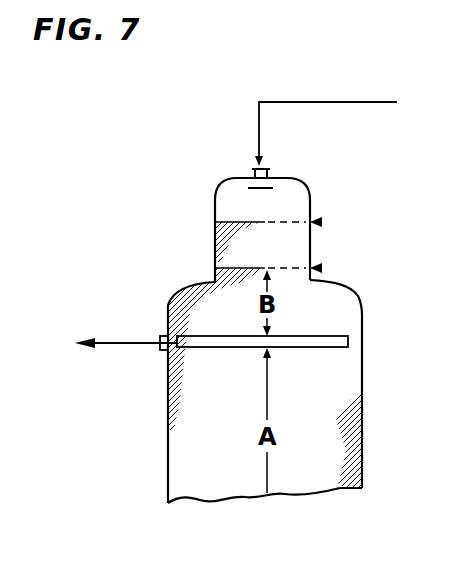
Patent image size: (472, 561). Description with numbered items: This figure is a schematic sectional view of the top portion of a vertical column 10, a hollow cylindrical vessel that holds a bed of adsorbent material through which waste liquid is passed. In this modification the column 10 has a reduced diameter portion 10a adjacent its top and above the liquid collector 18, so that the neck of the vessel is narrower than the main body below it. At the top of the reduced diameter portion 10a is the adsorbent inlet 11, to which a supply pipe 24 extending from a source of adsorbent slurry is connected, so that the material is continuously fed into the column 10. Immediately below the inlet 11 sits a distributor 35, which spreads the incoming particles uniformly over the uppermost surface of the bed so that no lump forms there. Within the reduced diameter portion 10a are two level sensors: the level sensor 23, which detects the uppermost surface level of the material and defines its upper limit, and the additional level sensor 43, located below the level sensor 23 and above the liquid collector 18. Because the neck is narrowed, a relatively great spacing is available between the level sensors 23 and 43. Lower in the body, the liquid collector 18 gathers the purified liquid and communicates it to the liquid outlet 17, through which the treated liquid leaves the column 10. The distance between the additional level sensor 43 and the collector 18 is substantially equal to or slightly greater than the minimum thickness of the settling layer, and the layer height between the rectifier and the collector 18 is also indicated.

The column 10 is at (168, 441).
The reduced diameter portion 10a is at (213, 208).
The adsorbent inlet 11 is at (250, 170).
The liquid outlet 17 is at (162, 351).
The liquid collector 18 is at (323, 348).
The level sensor 23 is at (314, 222).
The supply pipe 24 is at (325, 102).
The distributor 35 is at (254, 188).
The additional level sensor 43 is at (314, 268).